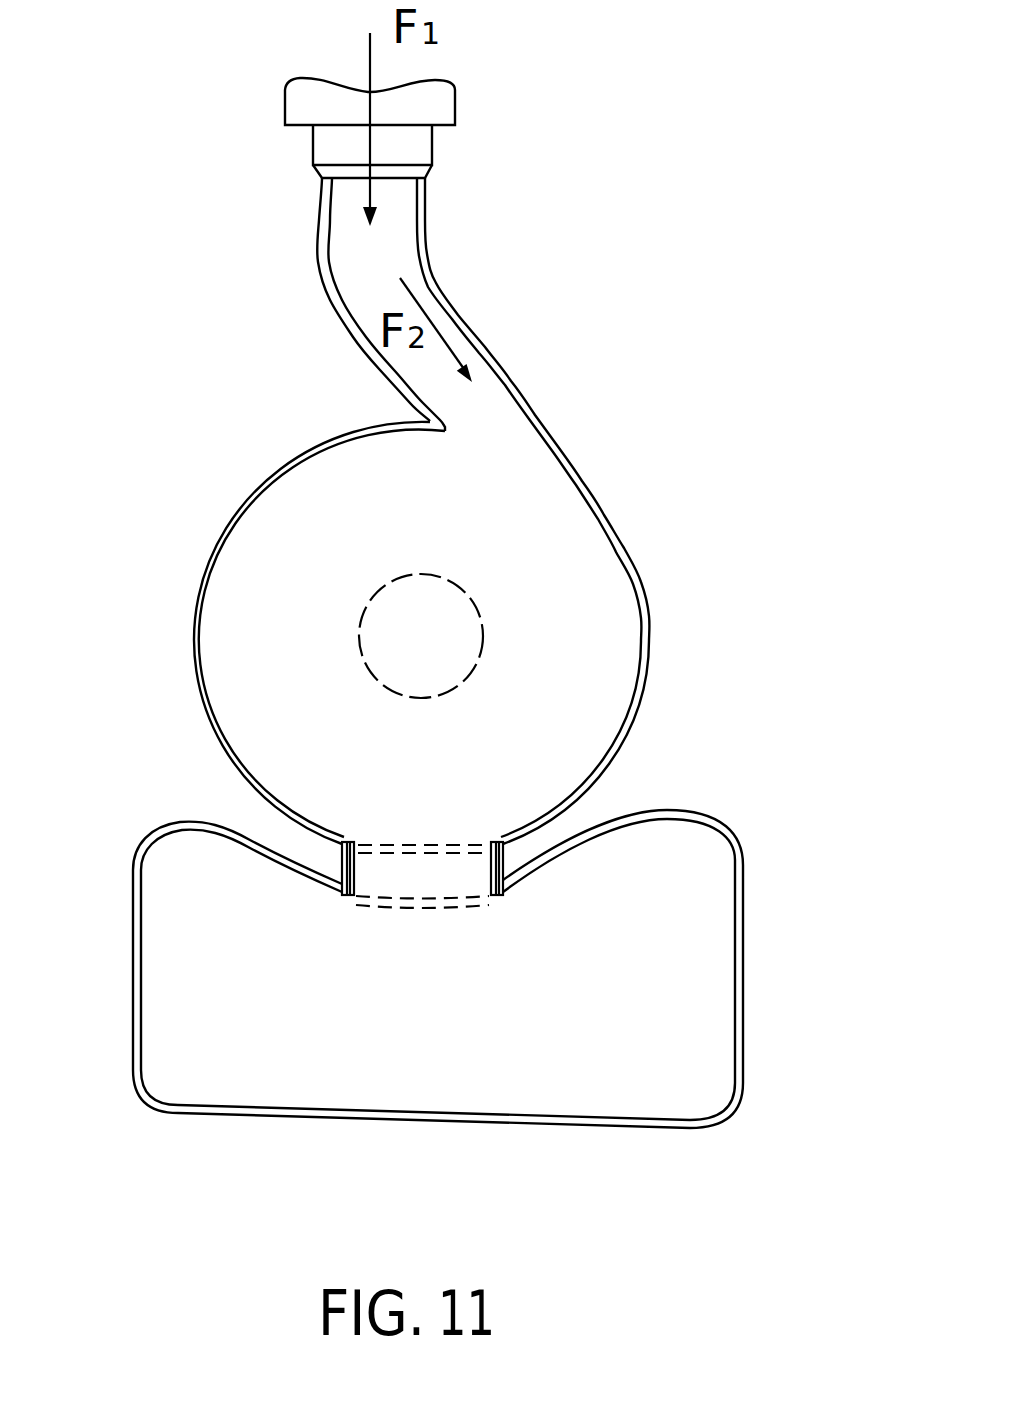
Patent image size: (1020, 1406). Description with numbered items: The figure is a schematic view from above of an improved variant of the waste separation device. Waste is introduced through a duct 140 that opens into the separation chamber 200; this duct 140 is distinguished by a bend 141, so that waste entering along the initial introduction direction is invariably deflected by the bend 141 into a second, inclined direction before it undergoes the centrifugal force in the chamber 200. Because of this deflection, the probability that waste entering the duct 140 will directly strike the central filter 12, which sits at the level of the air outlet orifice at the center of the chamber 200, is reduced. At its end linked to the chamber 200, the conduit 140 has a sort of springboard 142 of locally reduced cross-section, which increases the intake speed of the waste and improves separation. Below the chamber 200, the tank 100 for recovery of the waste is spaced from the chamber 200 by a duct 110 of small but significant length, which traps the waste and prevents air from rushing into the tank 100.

The filter 12 is at (458, 598).
The tank 100 is at (744, 1023).
The duct 110 is at (500, 857).
The duct 140 is at (446, 226).
The bend 141 is at (316, 270).
The springboard 142 is at (468, 418).
The separation chamber 200 is at (192, 557).